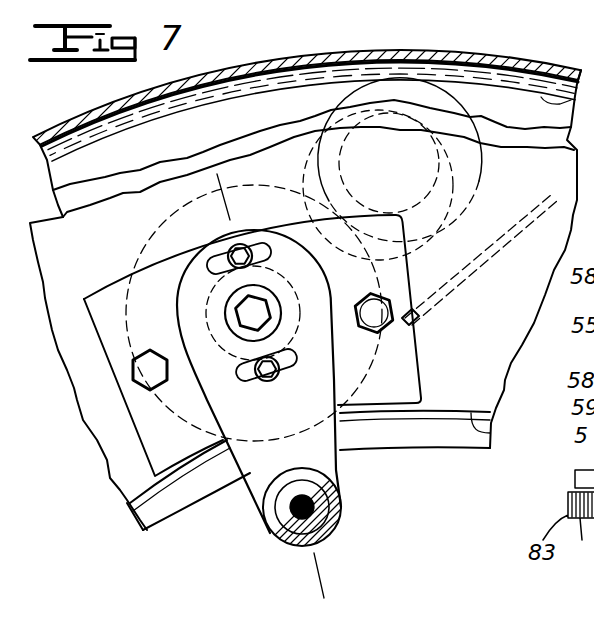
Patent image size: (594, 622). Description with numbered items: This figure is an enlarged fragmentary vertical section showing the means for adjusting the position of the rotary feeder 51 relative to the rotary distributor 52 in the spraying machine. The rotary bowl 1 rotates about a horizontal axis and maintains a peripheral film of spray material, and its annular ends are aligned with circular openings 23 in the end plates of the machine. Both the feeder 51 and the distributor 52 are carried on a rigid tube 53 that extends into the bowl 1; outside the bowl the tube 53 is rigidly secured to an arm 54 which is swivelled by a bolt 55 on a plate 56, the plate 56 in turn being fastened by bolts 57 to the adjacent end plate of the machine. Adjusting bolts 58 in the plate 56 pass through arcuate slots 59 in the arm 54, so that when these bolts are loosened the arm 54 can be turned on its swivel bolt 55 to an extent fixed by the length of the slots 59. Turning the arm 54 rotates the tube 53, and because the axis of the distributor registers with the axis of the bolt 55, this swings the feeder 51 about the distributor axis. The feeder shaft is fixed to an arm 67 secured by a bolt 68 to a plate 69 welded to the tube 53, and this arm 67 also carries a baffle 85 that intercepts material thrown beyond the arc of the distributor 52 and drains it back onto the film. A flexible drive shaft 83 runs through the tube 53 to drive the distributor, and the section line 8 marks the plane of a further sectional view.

The bowl 1 is at (251, 65).
The section line 8- 8 is at (219, 178).
The circular openings 23 is at (490, 433).
The rotary feeder 51 is at (336, 105).
The rotary distributor 52 is at (148, 243).
The tube 53 is at (341, 513).
The arm 54 is at (322, 457).
The bolt 55 is at (256, 311).
The plate 56 is at (412, 373).
The bolts 57 is at (150, 390).
The adjusting bolts 58 is at (243, 244).
The arcuate slots 59 is at (272, 254).
The arm 67 is at (483, 161).
The bolt 68 is at (305, 186).
The plate 69 is at (362, 325).
The flexible drive shaft 83 is at (291, 513).
The baffle 85 is at (462, 282).